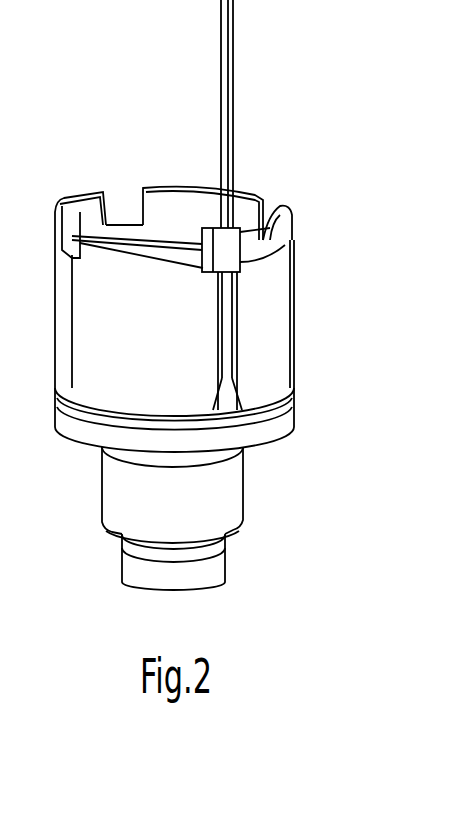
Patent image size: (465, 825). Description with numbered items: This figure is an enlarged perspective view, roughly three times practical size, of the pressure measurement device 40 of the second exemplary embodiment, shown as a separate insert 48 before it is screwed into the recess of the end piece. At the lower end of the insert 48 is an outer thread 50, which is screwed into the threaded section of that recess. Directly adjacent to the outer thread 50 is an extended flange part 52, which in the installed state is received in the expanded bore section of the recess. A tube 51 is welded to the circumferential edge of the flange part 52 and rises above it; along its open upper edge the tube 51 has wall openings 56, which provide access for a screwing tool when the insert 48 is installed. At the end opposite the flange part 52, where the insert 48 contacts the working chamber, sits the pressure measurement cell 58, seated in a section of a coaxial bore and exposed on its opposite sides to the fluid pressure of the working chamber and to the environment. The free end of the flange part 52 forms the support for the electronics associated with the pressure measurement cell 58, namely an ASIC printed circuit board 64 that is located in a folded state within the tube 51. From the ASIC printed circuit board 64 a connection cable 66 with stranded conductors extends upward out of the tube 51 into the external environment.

The pressure measurement device 40 is at (68, 510).
The insert 48 is at (100, 450).
The outer thread 50 is at (233, 490).
The tube 51 is at (294, 282).
The flange part 52 is at (275, 428).
The wall openings 56 is at (62, 200).
The pressure measurement cell 58 is at (140, 577).
The ASIC printed circuit board 64 is at (215, 337).
The connection cable 66 is at (233, 60).